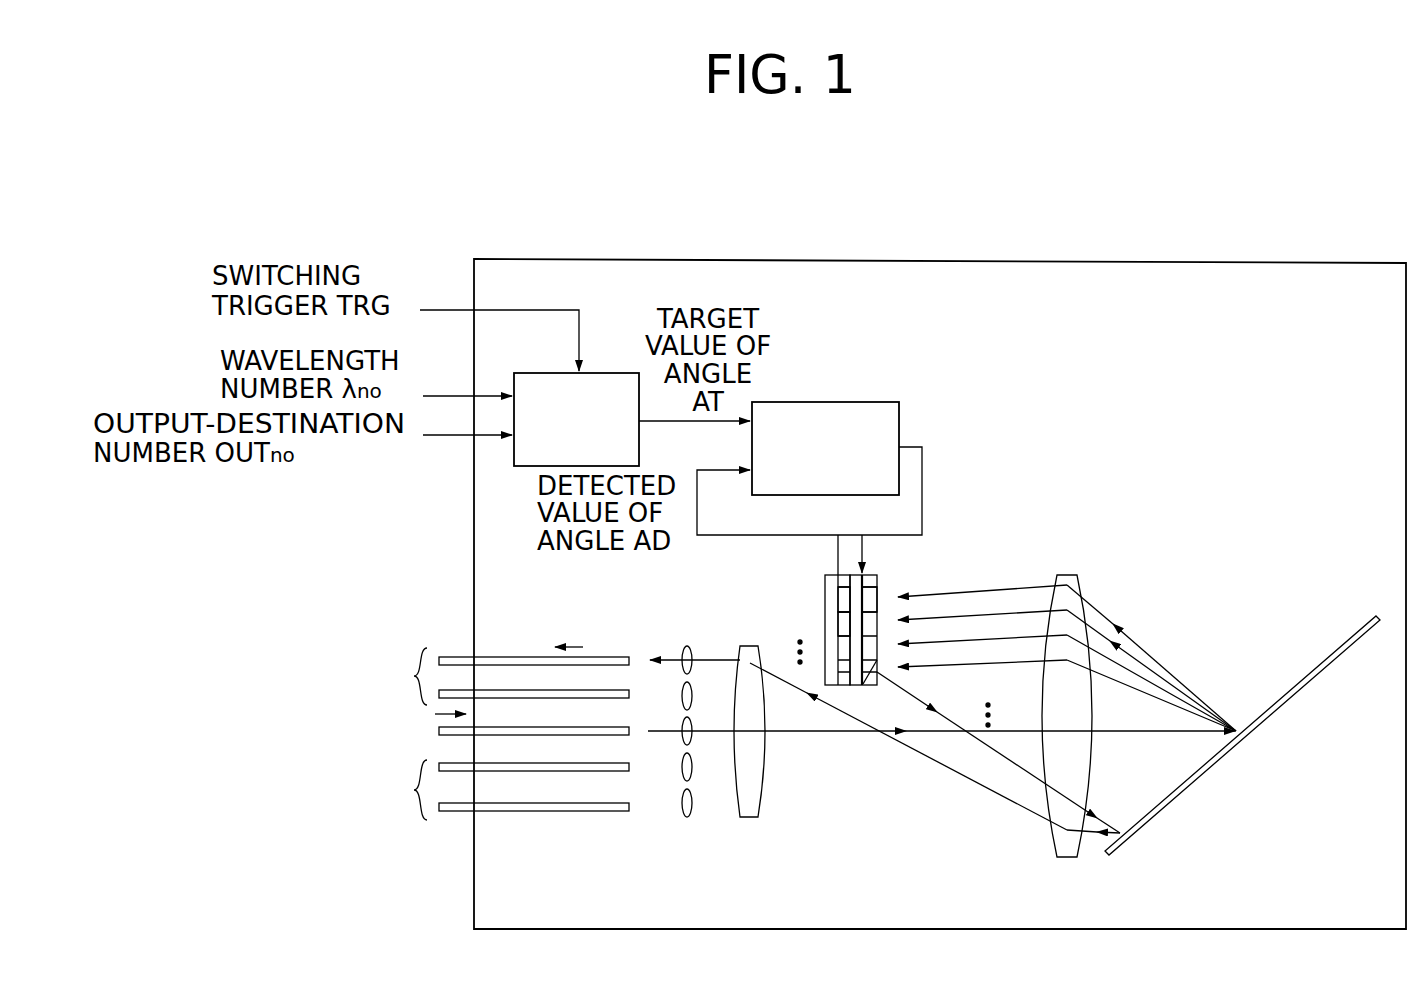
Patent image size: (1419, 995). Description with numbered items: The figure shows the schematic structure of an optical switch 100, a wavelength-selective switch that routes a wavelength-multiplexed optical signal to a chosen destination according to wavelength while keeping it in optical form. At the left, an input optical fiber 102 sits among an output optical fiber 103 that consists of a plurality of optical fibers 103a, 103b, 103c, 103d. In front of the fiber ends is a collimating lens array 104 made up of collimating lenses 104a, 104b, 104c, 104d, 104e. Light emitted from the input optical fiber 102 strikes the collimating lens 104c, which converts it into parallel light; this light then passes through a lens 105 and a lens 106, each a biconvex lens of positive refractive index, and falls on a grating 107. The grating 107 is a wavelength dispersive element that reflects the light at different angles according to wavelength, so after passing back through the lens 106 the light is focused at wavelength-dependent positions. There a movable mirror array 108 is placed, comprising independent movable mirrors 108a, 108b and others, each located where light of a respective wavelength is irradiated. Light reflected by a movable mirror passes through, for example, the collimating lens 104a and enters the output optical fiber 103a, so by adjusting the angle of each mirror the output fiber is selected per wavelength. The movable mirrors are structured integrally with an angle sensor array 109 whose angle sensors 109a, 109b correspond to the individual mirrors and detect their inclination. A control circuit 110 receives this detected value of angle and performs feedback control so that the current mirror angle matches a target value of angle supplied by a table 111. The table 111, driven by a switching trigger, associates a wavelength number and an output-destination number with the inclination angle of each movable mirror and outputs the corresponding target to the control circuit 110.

The optical switch 100 is at (1120, 260).
The input optical fiber 102 is at (440, 726).
The output optical fiber 103 is at (484, 724).
The optical fiber 103a is at (459, 656).
The optical fiber 103b is at (527, 690).
The optical fiber 103c is at (466, 763).
The optical fiber 103d is at (524, 812).
The collimating lens array 104 is at (671, 748).
The collimating lens 104a is at (684, 652).
The collimating lens 104b is at (682, 697).
The collimating lens 104c is at (692, 740).
The collimating lens 104d is at (692, 776).
The collimating lens 104e is at (683, 816).
The lens 105 is at (767, 758).
The lens 106 is at (1052, 845).
The grating 107 is at (1235, 745).
The movable mirror array 108 is at (941, 607).
The movable mirror 108a is at (877, 592).
The movable mirror 108b is at (877, 630).
The angle sensor array 109 is at (781, 613).
The angle sensor 109a is at (825, 600).
The angle sensor 109b is at (825, 623).
The control circuit 110 is at (852, 401).
The table 111 is at (605, 372).